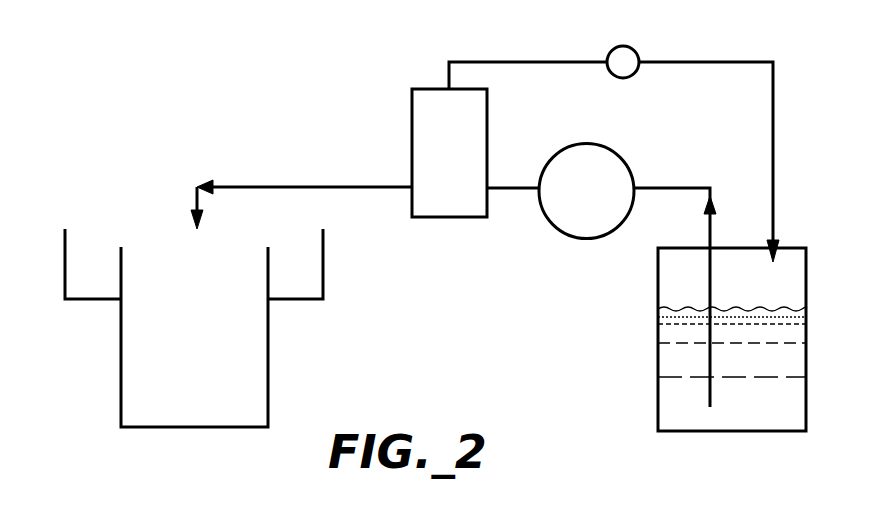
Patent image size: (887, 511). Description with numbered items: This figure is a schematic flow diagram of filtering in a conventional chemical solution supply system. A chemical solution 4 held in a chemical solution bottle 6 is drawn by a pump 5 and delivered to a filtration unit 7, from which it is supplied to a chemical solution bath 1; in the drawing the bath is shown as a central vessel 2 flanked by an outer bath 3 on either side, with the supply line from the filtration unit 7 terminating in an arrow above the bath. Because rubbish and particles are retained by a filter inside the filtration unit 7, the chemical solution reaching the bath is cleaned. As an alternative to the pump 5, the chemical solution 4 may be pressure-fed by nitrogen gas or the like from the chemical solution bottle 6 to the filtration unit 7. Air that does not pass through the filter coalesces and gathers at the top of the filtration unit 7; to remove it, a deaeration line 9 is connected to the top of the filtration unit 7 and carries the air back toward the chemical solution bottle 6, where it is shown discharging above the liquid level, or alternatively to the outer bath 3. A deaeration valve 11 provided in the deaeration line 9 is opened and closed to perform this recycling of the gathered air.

The chemical solution bath 1 is at (121, 358).
The culture tank 2 is at (268, 372).
The outer bath 3 is at (65, 263).
The chemical solution 4 is at (665, 382).
The pump 5 is at (586, 143).
The chemical solution bottle 6 is at (793, 293).
The filtration unit 7 is at (487, 137).
The deaeration line 9 is at (515, 60).
The deaeration valve 11 is at (623, 46).